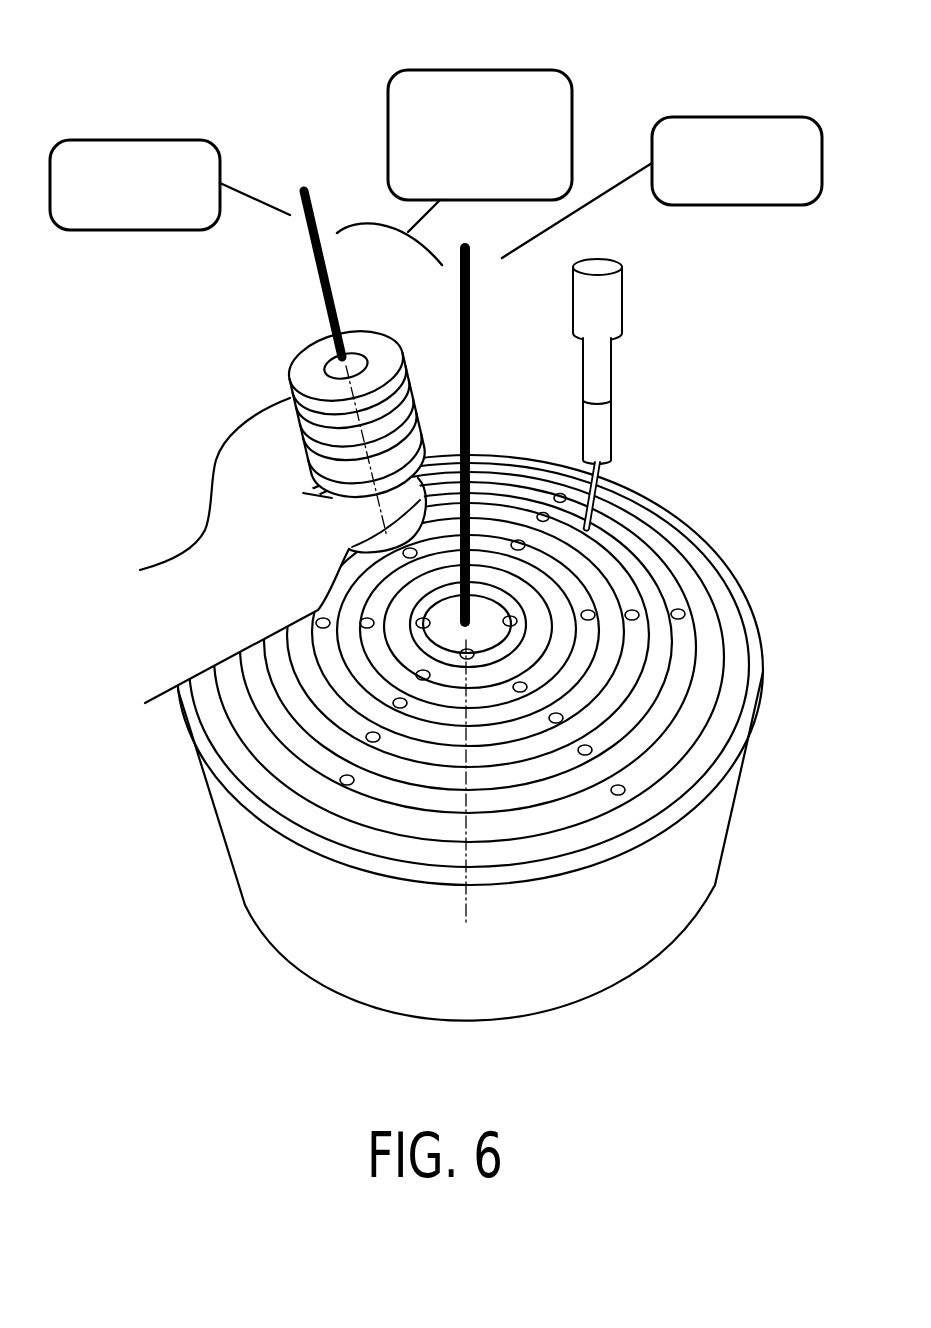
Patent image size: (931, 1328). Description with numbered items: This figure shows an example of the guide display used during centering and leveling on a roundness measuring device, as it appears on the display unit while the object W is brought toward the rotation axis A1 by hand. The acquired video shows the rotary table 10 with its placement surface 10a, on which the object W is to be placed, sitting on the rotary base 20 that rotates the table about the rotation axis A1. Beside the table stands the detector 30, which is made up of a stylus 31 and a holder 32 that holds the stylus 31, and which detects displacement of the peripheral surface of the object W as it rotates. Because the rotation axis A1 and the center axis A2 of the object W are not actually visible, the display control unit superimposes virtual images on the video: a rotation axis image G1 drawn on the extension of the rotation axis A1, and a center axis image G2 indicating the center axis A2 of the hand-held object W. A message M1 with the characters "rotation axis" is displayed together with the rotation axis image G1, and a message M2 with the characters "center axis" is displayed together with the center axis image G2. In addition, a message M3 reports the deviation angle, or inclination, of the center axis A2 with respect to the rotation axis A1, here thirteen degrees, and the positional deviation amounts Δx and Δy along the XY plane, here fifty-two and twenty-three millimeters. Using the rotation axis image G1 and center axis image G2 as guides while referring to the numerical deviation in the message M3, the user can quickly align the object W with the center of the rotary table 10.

The rotary table 10 is at (727, 697).
The placement surface 10a is at (703, 610).
The rotary base 20 is at (697, 880).
The detector 30 is at (660, 395).
The stylus 31 is at (588, 510).
The holder 32 is at (600, 425).
The object W is at (318, 362).
The rotation axis A1 is at (467, 913).
The center axis A2 is at (375, 508).
The rotation axis image G1 is at (471, 336).
The center axis image G2 is at (315, 275).
The message M1 is at (757, 117).
The message M2 is at (100, 140).
The message M3 is at (456, 70).